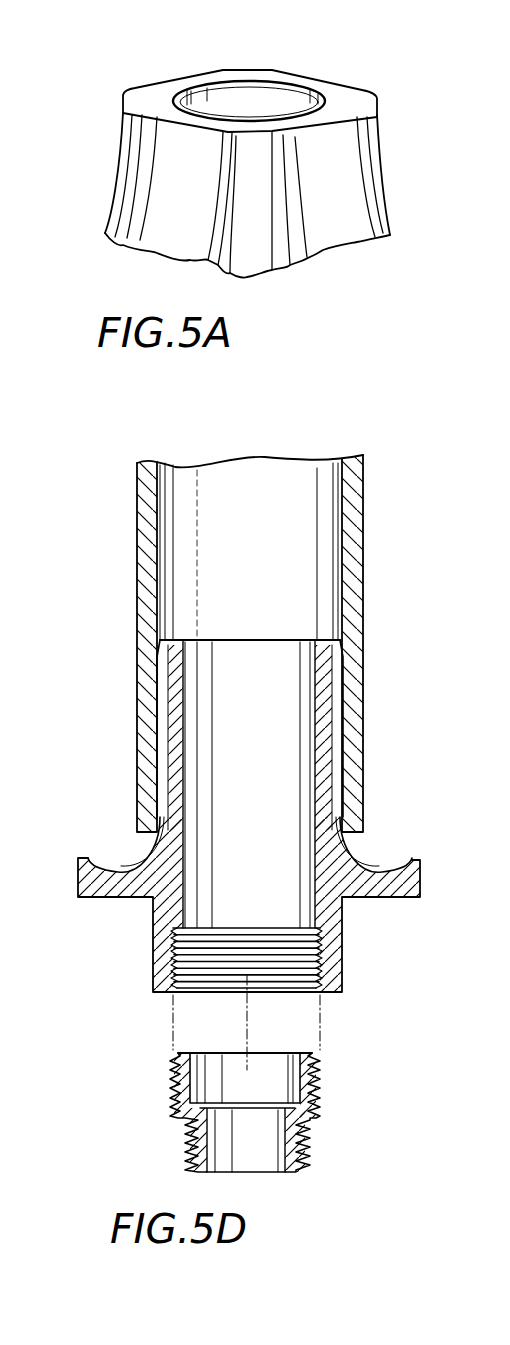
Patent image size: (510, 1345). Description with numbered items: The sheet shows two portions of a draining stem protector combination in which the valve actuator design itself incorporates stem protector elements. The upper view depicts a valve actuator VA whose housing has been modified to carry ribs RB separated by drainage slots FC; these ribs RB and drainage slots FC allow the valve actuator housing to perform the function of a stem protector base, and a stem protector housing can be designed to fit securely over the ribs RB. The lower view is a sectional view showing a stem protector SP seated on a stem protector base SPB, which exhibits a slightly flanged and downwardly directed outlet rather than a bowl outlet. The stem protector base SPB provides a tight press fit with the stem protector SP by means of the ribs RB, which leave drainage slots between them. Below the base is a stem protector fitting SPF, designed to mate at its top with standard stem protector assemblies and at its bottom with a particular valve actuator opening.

In FIG. 5A, the valve actuator VA is at (373, 62).
In FIG. 5A, the drainage slot FC is at (165, 168).
In FIG. 5A, the rib RB is at (115, 205).
In FIG. 5D, the rib RB is at (333, 727).
In FIG. 5D, the stem protector SP is at (365, 578).
In FIG. 5D, the stem protector base SPB is at (413, 860).
In FIG. 5D, the stem protector fitting SPF is at (333, 1079).